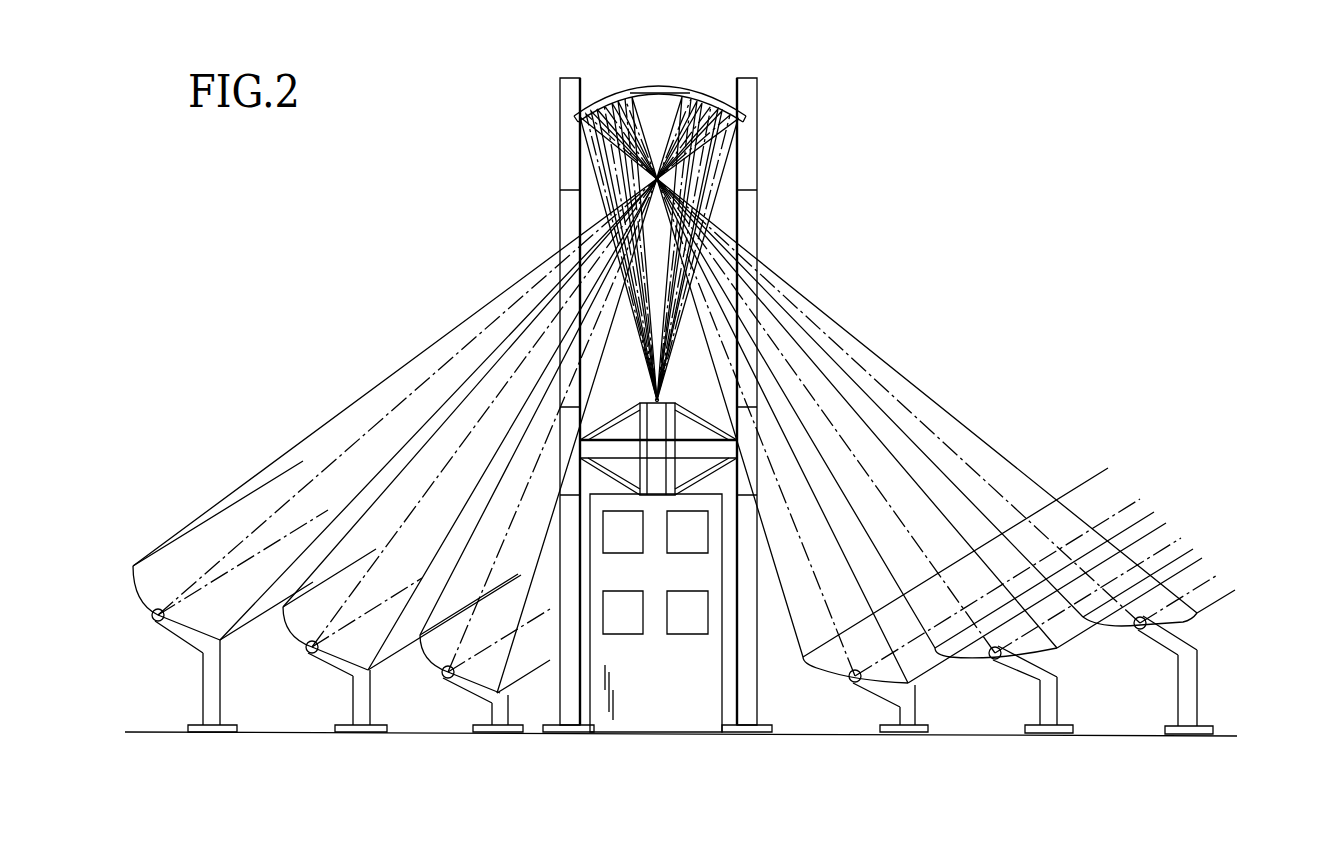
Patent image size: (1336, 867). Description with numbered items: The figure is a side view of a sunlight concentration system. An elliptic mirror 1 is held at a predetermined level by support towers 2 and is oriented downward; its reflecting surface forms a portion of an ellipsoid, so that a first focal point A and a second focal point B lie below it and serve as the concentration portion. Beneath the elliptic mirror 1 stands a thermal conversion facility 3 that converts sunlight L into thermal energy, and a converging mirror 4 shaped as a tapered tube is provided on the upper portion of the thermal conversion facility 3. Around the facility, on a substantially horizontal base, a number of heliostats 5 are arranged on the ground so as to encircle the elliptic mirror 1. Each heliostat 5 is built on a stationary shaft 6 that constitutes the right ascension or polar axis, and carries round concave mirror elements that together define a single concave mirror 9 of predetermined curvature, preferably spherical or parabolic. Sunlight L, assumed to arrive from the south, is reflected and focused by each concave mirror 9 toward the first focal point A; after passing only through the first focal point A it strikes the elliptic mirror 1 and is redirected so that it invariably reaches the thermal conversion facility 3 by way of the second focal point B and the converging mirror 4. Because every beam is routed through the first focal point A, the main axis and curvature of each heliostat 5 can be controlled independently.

The elliptic mirror 1 is at (701, 86).
The support towers 2 is at (758, 133).
The thermal conversion facility 3 is at (690, 718).
The converging mirror 4 is at (680, 428).
The heliostat 5 is at (1166, 696).
The stationary shaft 6 is at (1203, 645).
The concave mirror 9 is at (1108, 628).
The first focal point A is at (660, 180).
The second focal point B is at (660, 398).
The sunlight L is at (1222, 598).